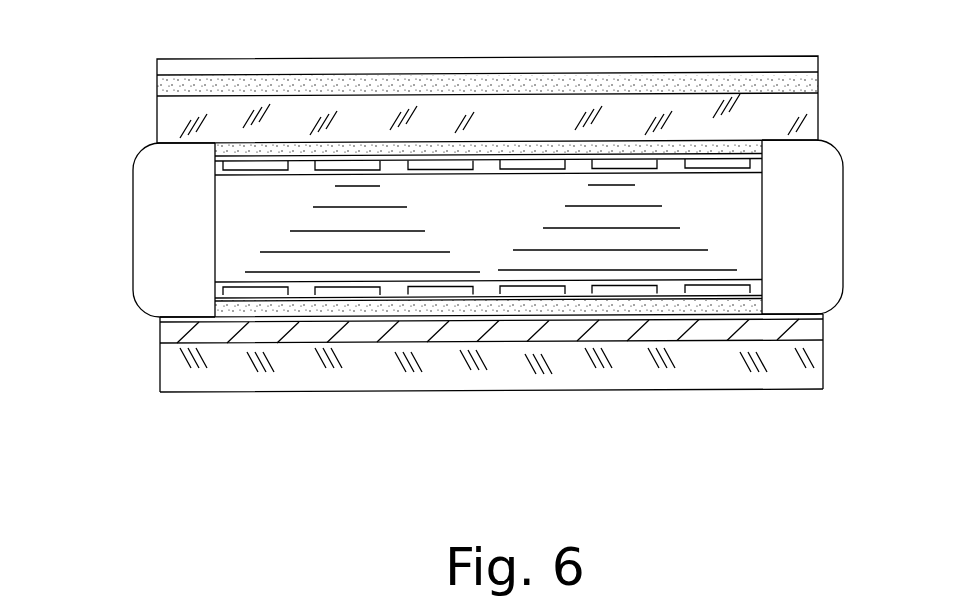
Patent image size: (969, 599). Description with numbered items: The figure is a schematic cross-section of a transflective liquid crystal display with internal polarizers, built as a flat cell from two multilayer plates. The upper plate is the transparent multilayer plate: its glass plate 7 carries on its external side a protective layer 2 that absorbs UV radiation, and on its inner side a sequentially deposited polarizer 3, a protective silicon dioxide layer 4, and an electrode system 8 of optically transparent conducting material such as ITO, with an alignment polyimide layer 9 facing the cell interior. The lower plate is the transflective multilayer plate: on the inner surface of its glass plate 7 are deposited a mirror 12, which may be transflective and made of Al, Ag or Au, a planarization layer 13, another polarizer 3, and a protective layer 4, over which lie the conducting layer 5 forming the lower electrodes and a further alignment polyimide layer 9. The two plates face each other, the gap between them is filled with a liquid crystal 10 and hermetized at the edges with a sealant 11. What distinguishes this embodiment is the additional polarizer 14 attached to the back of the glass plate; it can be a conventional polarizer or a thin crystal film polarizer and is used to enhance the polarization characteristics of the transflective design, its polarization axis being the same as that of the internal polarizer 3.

The protective layer 2 is at (715, 63).
The polarizer 3 is at (328, 150).
The protective silicon dioxide layer 4 is at (456, 159).
The conducting layer 5 is at (545, 290).
The glass plate 7 is at (805, 125).
The electrode system 8 is at (543, 165).
The alignment polyimide layer 9 is at (670, 168).
The liquid crystal 10 is at (252, 237).
The sealant 11 is at (157, 267).
The mirror 12 is at (168, 333).
The planarization layer 13 is at (163, 320).
The additional polarizer 14 is at (167, 88).